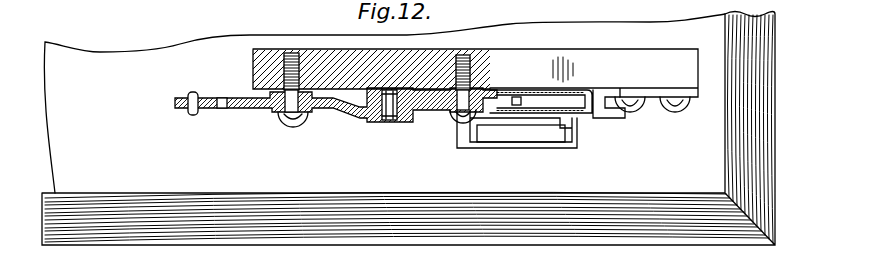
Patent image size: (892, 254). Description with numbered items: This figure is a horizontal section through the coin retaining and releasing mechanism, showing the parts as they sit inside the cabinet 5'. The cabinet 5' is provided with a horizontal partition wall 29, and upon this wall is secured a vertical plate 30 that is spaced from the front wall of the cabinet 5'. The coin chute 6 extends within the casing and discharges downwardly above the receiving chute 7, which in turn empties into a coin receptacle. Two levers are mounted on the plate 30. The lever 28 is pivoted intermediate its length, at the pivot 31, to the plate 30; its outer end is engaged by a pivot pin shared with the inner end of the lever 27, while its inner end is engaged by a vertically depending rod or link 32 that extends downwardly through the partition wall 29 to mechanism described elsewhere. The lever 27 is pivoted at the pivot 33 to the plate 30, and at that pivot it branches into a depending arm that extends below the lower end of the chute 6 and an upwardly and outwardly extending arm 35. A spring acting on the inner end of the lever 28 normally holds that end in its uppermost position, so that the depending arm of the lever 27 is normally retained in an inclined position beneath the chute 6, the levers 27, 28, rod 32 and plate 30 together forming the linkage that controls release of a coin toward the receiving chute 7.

The cabinet 5' is at (418, 129).
The coin slot or chute 6 is at (572, 95).
The receiving chute 7 is at (540, 143).
The lever 27 is at (430, 104).
The lever 28 is at (333, 108).
The horizontal partition wall 29 is at (118, 60).
The vertical plate 30 is at (663, 57).
The pivot 31 is at (275, 114).
The vertically depending rod or link 32 is at (195, 92).
The pivot 33 is at (450, 128).
The upwardly and outwardly extending arm 35 is at (518, 97).